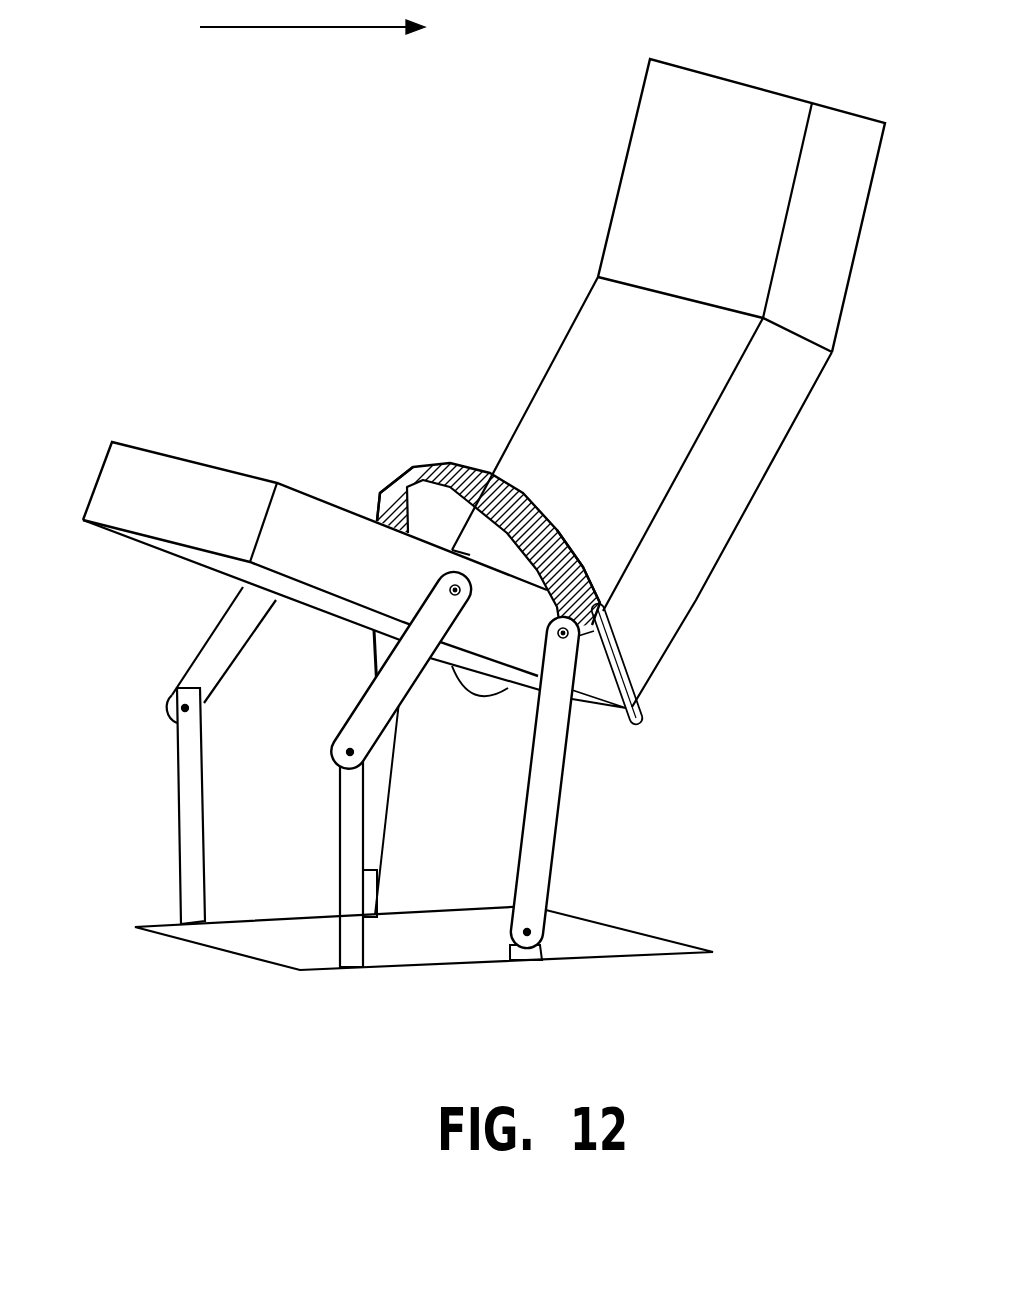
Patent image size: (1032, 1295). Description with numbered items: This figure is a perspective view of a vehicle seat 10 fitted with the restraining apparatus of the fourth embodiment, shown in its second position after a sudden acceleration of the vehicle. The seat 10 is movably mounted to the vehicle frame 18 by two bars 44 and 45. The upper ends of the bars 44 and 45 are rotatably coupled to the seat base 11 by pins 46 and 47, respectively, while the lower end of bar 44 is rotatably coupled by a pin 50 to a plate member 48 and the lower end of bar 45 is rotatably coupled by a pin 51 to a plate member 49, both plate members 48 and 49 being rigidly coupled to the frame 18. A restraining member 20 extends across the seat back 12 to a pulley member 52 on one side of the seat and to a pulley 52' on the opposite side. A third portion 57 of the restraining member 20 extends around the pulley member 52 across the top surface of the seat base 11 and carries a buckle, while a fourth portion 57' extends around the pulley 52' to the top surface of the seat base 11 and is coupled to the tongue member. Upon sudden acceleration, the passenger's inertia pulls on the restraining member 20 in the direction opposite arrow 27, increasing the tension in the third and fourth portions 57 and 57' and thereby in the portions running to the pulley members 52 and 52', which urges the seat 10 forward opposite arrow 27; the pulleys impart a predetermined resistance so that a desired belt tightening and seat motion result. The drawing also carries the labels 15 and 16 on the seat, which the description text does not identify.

The chair 10 is at (755, 565).
The seat 11 is at (118, 462).
The backrest 12 is at (600, 330).
The seat frame 15 is at (503, 573).
The seat cushion 16 is at (207, 460).
The base 18 is at (256, 952).
The arcuate track 20 is at (452, 445).
The direction of motion 27 is at (304, 31).
The rear link 44 is at (378, 800).
The front link 45 is at (240, 598).
The pivot 46 is at (560, 635).
The pivot 47 is at (460, 596).
The base bracket 48 is at (377, 906).
The base post 49 is at (190, 790).
The pivot pin 50 is at (377, 884).
The pivot pin 51 is at (182, 720).
The stop 52 is at (645, 676).
The stop 52' is at (482, 706).
The track end 57 is at (601, 561).
The track end 57' is at (375, 481).